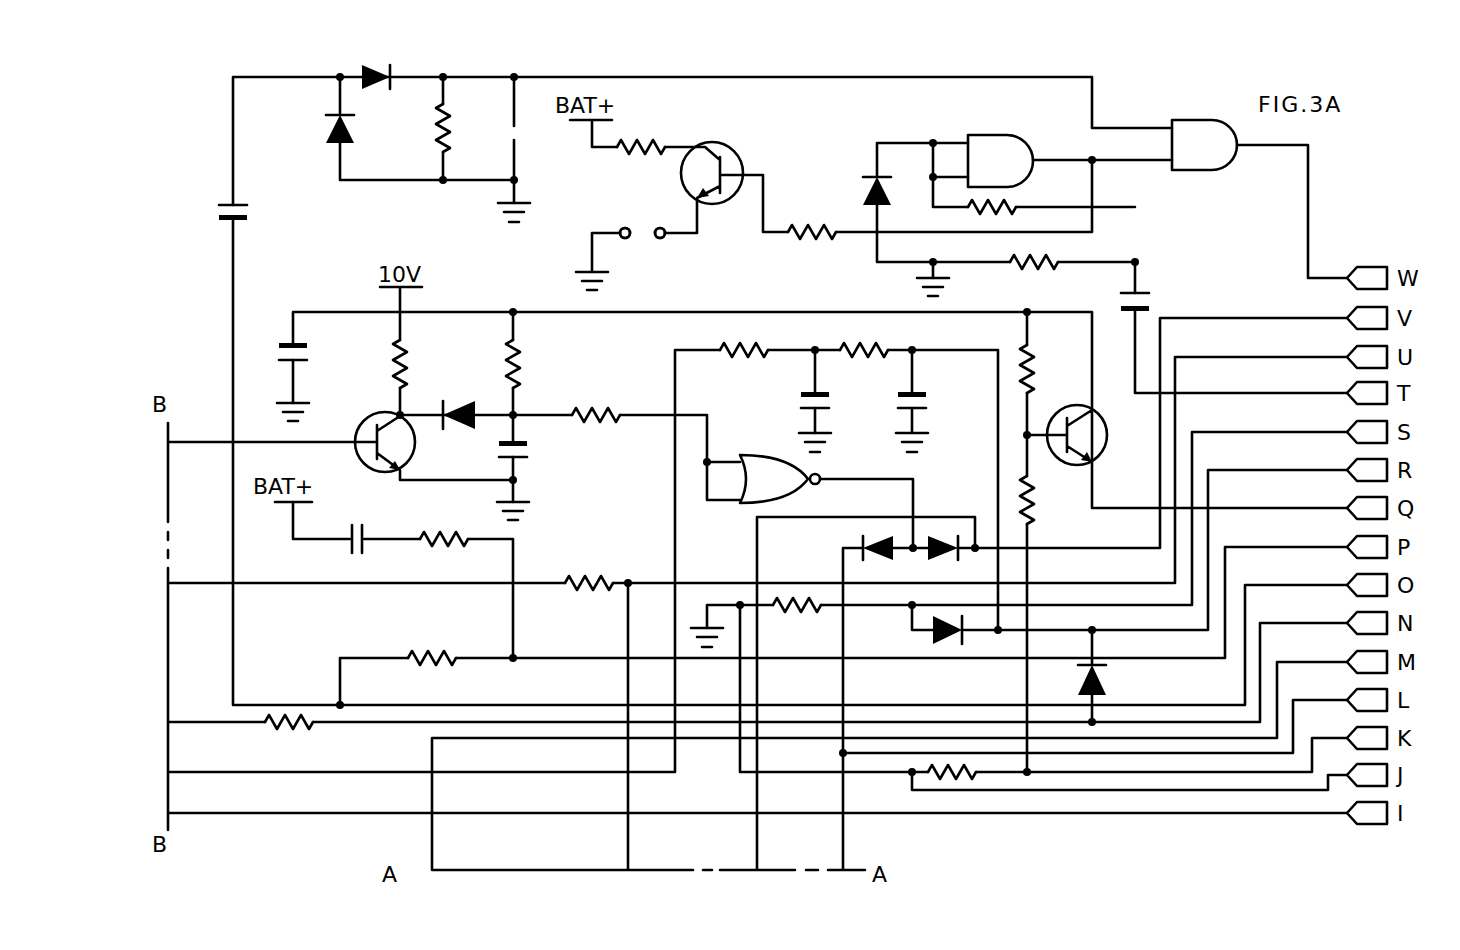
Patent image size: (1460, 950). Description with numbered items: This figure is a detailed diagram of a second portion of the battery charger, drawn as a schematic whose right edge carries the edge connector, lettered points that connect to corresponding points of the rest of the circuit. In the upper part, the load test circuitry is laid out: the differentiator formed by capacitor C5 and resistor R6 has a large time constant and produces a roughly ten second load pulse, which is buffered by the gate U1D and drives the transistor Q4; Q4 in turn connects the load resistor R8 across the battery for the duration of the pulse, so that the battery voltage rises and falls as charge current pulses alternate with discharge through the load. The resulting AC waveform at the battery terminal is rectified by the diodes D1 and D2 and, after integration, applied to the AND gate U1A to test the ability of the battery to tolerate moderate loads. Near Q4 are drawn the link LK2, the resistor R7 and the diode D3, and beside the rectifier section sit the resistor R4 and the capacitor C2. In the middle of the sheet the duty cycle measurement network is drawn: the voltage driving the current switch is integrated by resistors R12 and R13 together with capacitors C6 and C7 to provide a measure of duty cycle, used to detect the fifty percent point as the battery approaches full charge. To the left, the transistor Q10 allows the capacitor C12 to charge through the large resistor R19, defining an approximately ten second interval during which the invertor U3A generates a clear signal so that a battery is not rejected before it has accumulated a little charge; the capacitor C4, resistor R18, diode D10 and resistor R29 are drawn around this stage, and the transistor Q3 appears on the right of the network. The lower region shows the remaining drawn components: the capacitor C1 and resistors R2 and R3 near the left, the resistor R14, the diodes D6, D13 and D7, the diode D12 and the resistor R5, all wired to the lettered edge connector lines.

The rectifier diode D2 is at (398, 72).
The rectifier diode D1 is at (328, 133).
The resistor R4 is at (432, 128).
The capacitor C2 is at (224, 222).
The transistor Q4 is at (726, 142).
The load resistor R8 is at (642, 160).
The link jumper LK2 is at (655, 245).
The resistor R7 is at (823, 215).
The zener diode D3 is at (868, 183).
The gate U1D is at (1010, 140).
The AND gate U1A is at (1188, 128).
The differentiator resistor R6 is at (1040, 272).
The differentiator capacitor C5 is at (1150, 303).
The capacitor C4 is at (286, 340).
The resistor R18 is at (395, 370).
The diode D10 is at (462, 398).
The large resistor R19 is at (522, 350).
The resistor R29 is at (608, 400).
The transistor Q10 is at (368, 470).
The capacitor C12 is at (528, 452).
The integrating resistor R12 is at (726, 345).
The integrating resistor R13 is at (885, 350).
The integrating capacitor C6 is at (805, 398).
The integrating capacitor C7 is at (925, 408).
The invertor U3A is at (795, 485).
The diode D6 is at (860, 552).
The diode D13 is at (950, 530).
The transistor Q3 is at (1108, 440).
The capacitor C1 is at (345, 548).
The resistor R2 is at (440, 550).
The resistor R3 is at (440, 645).
The resistor R14 is at (800, 612).
The diode D7 is at (935, 640).
The zener diode D12 is at (1112, 680).
The resistor R5 is at (950, 783).